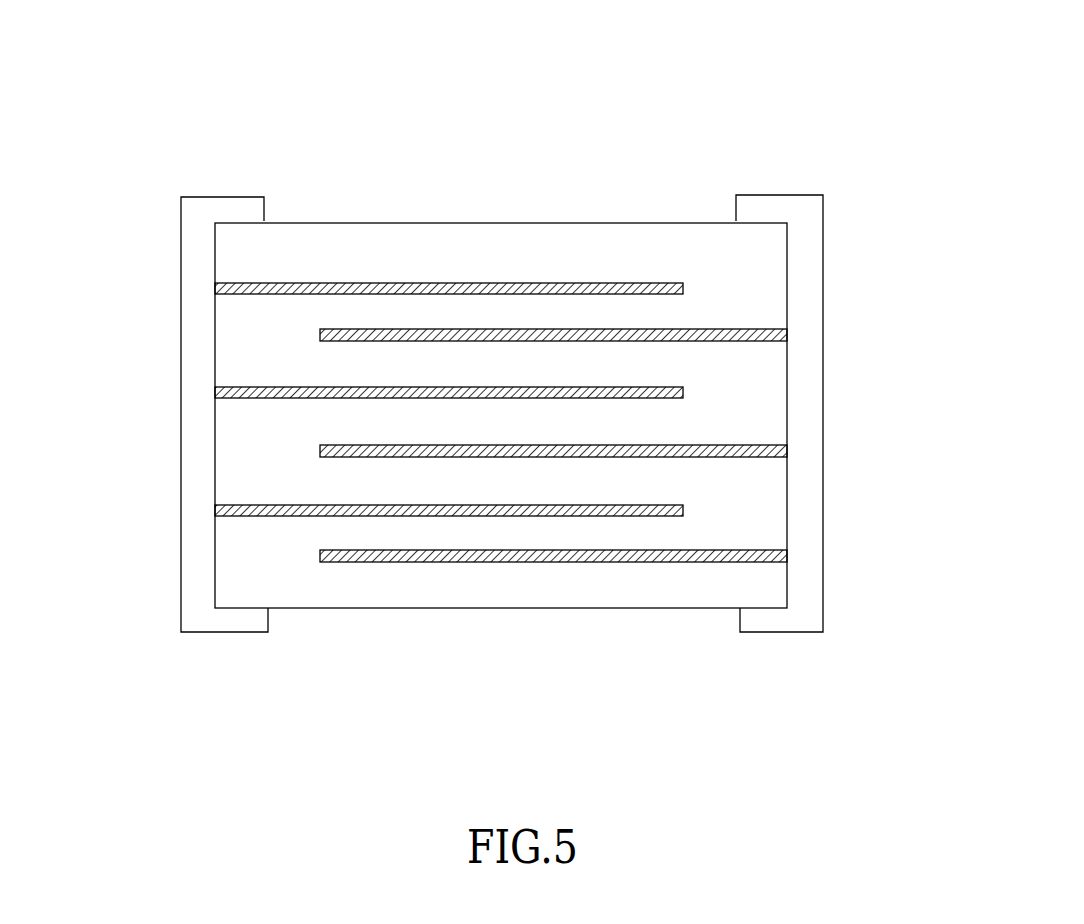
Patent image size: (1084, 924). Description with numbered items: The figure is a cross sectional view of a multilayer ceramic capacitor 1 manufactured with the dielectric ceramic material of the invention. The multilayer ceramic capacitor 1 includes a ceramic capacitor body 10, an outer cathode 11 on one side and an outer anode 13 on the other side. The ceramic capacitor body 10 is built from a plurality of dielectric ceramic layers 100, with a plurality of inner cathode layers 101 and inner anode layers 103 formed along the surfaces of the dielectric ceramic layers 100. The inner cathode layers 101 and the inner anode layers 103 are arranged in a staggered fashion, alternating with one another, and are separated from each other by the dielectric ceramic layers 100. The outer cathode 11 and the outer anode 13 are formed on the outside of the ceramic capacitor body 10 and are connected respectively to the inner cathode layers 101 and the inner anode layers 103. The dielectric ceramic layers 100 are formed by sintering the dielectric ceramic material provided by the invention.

The multilayer ceramic capacitor 1 is at (708, 114).
The ceramic capacitor body 10 is at (502, 212).
The dielectric ceramic layers 100 is at (460, 585).
The inner cathode layers 101 is at (450, 282).
The inner anode layers 103 is at (553, 562).
The outer cathode 11 is at (181, 197).
The outer anode 13 is at (823, 195).